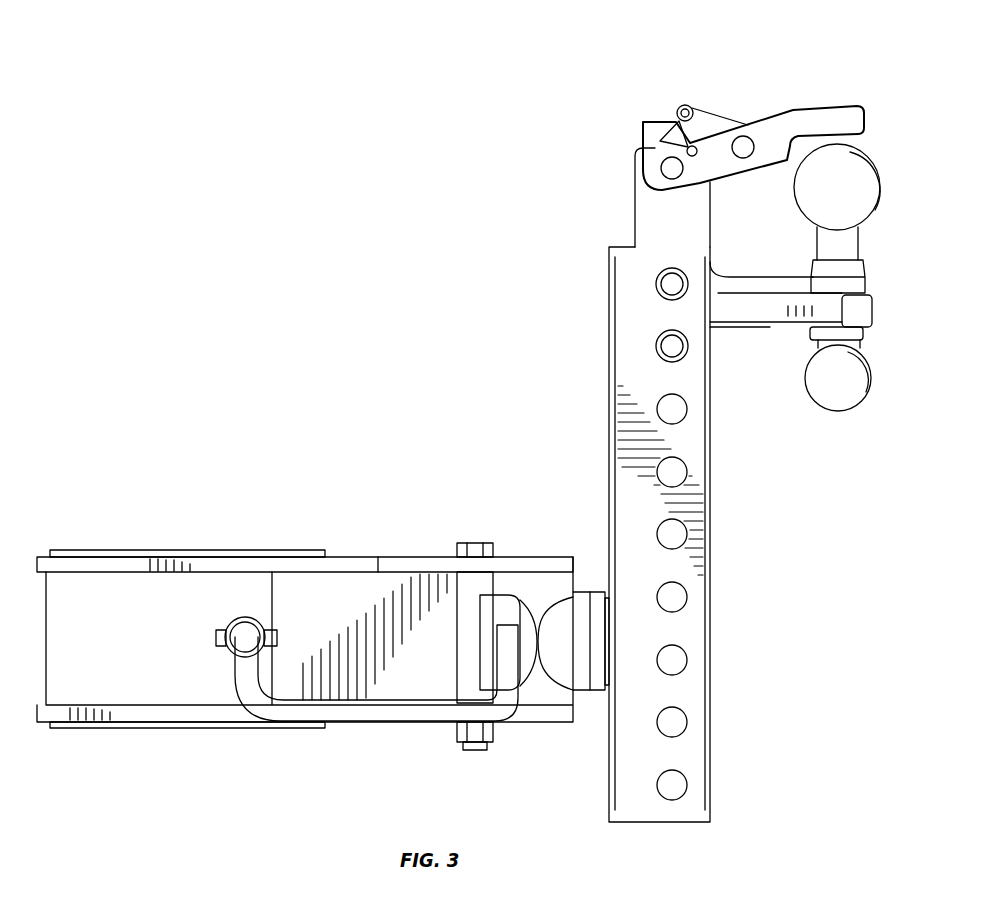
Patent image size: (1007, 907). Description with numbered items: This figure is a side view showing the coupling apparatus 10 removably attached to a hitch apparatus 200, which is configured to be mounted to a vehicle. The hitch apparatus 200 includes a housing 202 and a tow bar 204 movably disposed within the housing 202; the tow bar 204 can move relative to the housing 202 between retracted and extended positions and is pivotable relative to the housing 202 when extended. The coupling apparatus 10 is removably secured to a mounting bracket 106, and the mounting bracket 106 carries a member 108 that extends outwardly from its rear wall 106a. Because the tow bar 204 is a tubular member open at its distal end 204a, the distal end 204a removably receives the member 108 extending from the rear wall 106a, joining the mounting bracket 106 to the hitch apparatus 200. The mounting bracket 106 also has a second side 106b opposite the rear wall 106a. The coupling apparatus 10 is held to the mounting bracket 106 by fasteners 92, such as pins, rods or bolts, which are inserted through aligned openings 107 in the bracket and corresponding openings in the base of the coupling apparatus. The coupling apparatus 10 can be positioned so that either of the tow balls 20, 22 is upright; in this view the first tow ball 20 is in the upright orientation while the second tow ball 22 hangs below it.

The coupling apparatus 10 is at (846, 95).
The first tow ball 20 is at (816, 197).
The second tow ball 22 is at (828, 400).
The fasteners 92 is at (665, 347).
The mounting bracket 106 is at (688, 812).
The rear wall 106a is at (610, 445).
The second side of bracket 106b is at (692, 618).
The openings 107 is at (680, 782).
The member 108 is at (574, 664).
The hitch apparatus 200 is at (332, 516).
The housing 202 is at (200, 728).
The tow bar 204 is at (587, 700).
The distal end 204a is at (597, 597).